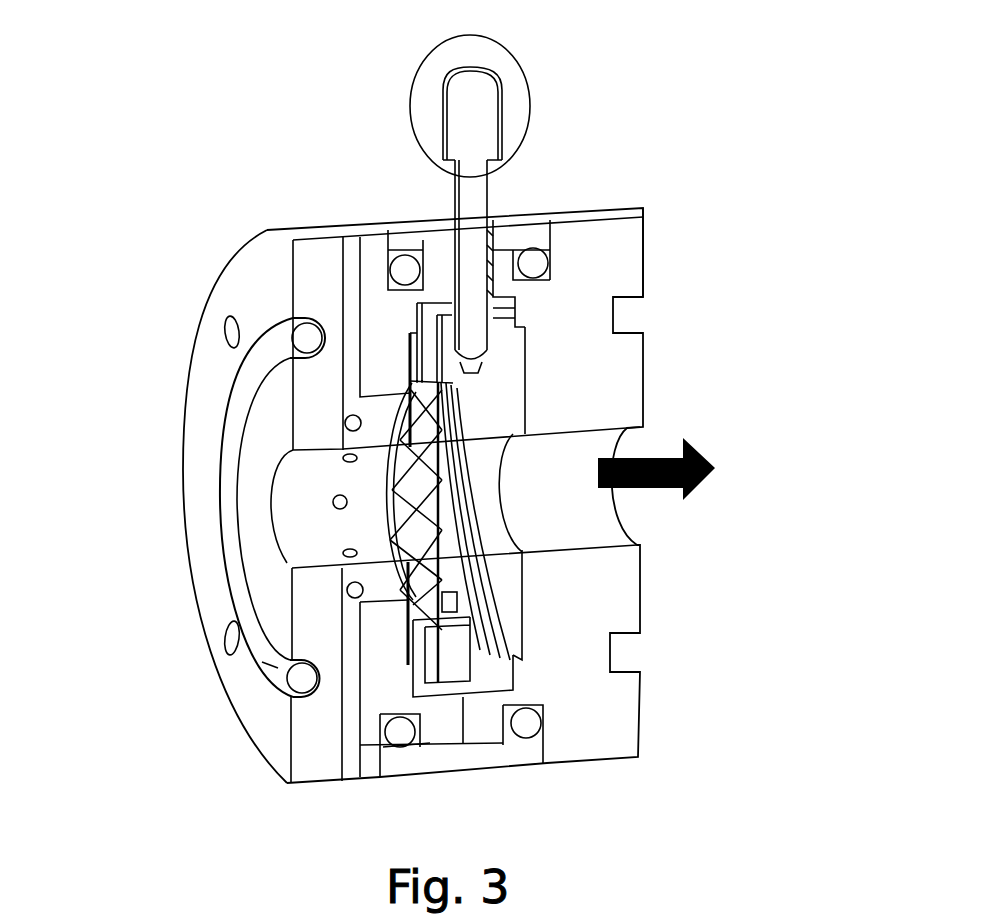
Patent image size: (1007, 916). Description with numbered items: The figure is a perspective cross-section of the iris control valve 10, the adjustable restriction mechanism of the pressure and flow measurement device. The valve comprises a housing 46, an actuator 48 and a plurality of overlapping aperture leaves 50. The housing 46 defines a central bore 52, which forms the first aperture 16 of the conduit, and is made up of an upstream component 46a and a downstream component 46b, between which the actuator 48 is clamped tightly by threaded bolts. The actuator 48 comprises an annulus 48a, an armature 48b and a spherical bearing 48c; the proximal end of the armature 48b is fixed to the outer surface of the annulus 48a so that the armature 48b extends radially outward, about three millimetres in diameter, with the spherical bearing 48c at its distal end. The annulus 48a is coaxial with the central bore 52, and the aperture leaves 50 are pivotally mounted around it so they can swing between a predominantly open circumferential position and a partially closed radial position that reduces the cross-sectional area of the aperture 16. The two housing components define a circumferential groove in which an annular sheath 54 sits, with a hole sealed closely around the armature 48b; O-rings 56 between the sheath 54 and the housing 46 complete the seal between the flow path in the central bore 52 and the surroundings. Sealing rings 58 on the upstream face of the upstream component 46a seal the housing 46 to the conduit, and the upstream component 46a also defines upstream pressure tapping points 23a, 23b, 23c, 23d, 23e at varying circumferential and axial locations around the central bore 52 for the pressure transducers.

The iris control valve 10 is at (762, 191).
The first aperture 16 is at (395, 538).
The upstream pressure tapping point 23a is at (345, 421).
The upstream pressure tapping point 23b is at (343, 458).
The upstream pressure tapping point 23c is at (333, 500).
The upstream pressure tapping point 23d is at (343, 553).
The upstream pressure tapping point 23e is at (275, 664).
The housing 46 is at (196, 279).
The upstream component 46a is at (355, 307).
The downstream component 46b is at (597, 285).
The actuator 48 is at (382, 106).
The annulus 48a is at (470, 662).
The armature 48b is at (473, 193).
The spherical bearing 48c is at (527, 122).
The aperture leaves 50 is at (452, 430).
The central bore 52 is at (300, 507).
The annular sheath 54 is at (423, 242).
The O-rings 56 is at (397, 737).
The sealing rings 58 is at (350, 594).